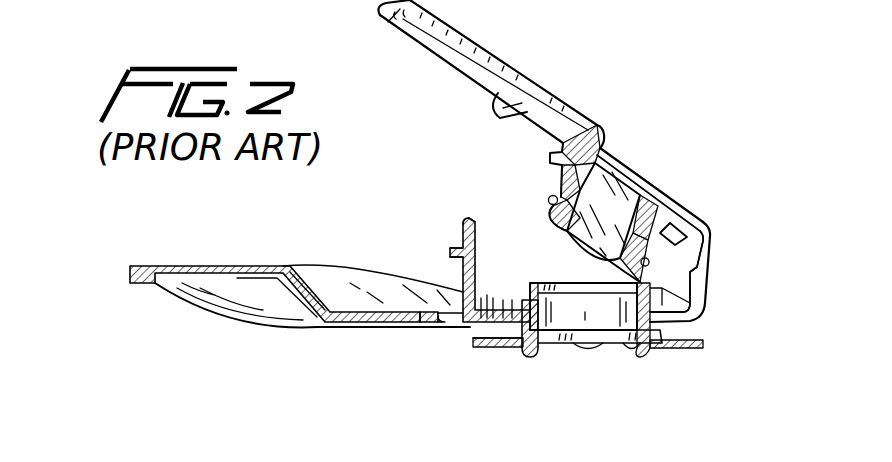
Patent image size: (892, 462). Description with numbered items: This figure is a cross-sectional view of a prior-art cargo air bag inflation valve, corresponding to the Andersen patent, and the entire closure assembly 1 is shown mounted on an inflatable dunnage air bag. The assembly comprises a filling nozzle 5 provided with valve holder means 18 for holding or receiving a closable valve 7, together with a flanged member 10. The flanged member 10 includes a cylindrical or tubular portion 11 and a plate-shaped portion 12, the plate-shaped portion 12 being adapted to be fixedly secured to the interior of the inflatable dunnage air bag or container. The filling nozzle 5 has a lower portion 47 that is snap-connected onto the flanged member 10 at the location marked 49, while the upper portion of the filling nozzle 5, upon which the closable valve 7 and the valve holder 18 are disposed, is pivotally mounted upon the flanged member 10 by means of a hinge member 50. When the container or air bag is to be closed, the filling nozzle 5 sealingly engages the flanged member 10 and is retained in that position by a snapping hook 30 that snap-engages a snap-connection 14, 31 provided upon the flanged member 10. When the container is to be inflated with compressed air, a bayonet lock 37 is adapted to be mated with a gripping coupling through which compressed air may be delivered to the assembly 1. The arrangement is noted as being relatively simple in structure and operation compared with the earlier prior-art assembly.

The closure assembly 1 is at (470, 380).
The filling nozzle 5 is at (538, 212).
The closable valve 7 is at (630, 170).
The flanged member 10 is at (589, 353).
The cylindrical or tubular portion 11 is at (701, 313).
The plate-shaped portion 12 is at (478, 340).
The snap-connection 14 is at (447, 250).
The valve holder means 18 is at (553, 220).
The snapping hook 30 is at (523, 98).
The snap-connection 31 is at (460, 221).
The bayonet lock 37 is at (595, 131).
The lower portion 47 is at (420, 328).
The snap-connection location 49 is at (508, 354).
The hinge member 50 is at (710, 283).